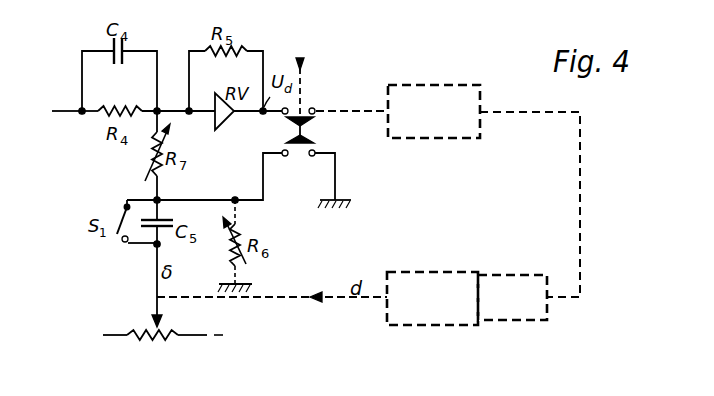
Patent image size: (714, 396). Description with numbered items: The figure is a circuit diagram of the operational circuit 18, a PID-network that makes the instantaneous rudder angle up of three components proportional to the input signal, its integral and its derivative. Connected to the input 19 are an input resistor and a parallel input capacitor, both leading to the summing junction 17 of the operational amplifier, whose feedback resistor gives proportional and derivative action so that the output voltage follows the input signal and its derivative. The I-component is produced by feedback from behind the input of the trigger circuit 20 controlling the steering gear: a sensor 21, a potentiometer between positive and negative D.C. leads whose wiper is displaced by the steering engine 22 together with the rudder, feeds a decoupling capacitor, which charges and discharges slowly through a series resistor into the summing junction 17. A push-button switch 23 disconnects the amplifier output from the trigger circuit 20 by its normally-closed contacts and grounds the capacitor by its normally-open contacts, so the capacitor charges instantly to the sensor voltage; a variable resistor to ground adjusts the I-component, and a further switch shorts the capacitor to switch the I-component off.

The summing junction 17 is at (185, 108).
The operational circuit 18 is at (303, 63).
The input 19 is at (65, 113).
The trigger circuit 20 is at (443, 88).
The sensor 21 is at (141, 345).
The steering engine 22 is at (443, 326).
The switch 23 is at (303, 113).